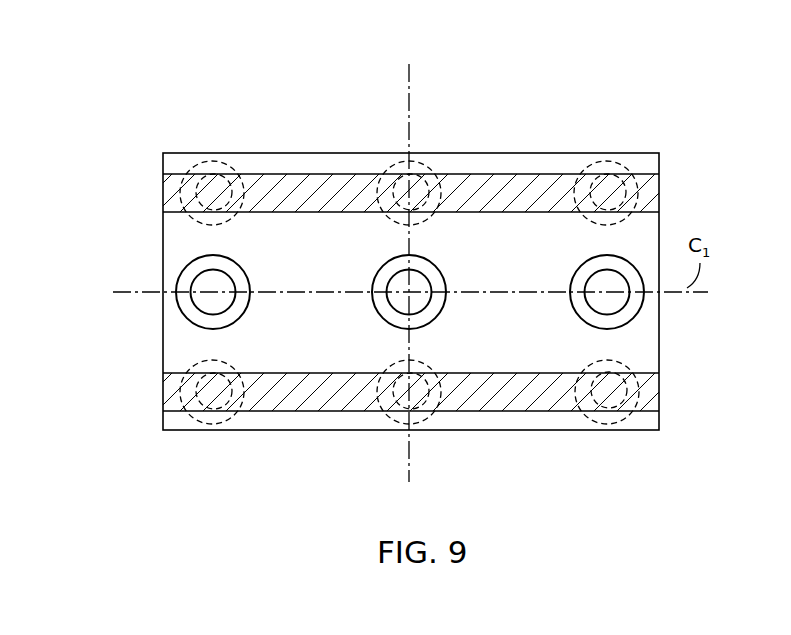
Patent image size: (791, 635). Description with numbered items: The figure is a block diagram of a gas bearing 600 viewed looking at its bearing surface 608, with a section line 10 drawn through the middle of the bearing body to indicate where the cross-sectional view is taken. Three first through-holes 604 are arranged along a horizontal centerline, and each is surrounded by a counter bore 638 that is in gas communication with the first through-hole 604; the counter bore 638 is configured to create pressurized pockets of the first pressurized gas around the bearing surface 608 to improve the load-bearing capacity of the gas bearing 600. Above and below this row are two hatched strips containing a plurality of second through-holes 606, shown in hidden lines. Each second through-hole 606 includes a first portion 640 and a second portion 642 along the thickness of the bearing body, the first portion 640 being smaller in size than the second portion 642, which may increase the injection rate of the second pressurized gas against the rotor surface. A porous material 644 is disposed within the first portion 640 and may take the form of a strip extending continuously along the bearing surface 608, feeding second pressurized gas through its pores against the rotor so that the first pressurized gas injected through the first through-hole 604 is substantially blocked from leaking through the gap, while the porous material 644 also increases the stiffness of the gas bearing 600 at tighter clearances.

The gas bearing 600 is at (358, 223).
The section line 10- 10 is at (409, 64).
The first through-hole 604 is at (197, 308).
The second through-holes 606 is at (378, 190).
The bearing surface 608 is at (185, 232).
The counter bore 638 is at (180, 272).
The first portion 640 is at (428, 190).
The second portion 642 is at (392, 158).
The porous material 644 is at (510, 178).